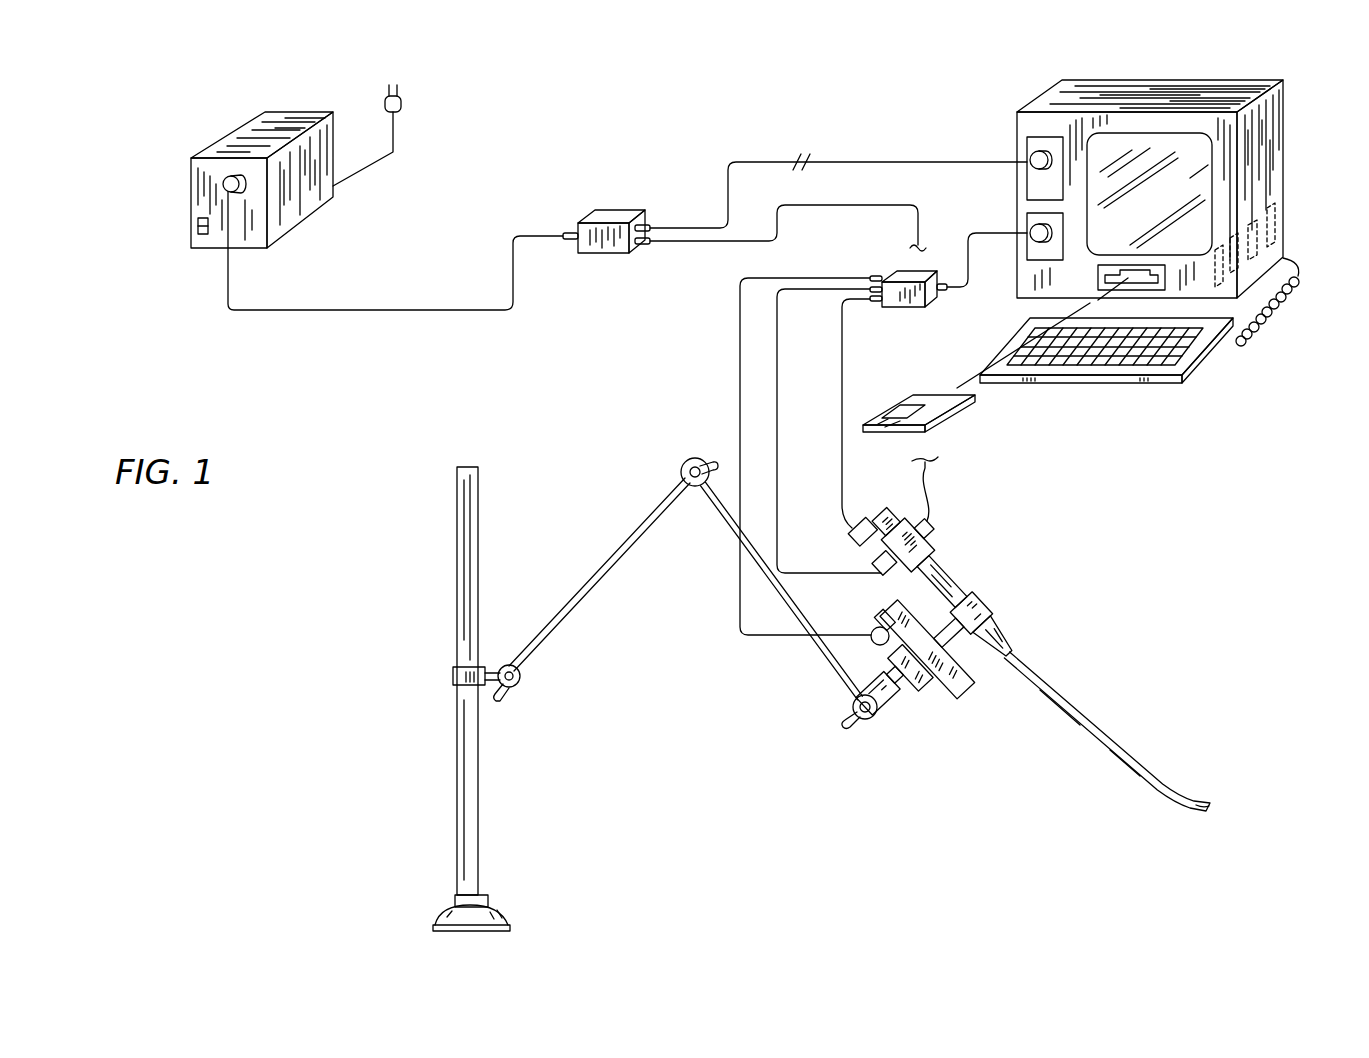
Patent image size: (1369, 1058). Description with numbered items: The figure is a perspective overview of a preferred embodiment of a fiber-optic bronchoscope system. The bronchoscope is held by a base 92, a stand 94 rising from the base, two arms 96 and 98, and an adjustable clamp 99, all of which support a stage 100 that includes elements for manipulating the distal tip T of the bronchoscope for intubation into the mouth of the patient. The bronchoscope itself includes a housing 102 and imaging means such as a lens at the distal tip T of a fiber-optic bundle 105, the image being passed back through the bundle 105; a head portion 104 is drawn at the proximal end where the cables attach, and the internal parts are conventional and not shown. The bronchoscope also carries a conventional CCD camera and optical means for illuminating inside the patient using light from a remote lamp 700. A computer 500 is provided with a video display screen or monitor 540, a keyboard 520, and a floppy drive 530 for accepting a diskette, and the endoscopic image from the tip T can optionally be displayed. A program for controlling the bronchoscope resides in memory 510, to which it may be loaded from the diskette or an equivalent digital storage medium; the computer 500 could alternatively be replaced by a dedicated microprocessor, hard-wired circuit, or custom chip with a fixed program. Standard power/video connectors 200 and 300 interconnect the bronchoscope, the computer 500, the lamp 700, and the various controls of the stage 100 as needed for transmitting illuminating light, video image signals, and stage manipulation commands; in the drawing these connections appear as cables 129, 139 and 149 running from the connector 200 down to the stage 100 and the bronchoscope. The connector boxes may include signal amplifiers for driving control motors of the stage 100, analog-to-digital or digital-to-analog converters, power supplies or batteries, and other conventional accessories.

The remote lamp 700 is at (268, 240).
The power/video connector 300 is at (612, 255).
The power/video connector 200 is at (896, 270).
The cable 129 is at (740, 328).
The cable 139 is at (777, 362).
The cable 149 is at (842, 405).
The computer 500 is at (1050, 97).
The video display screen or monitor 540 is at (1195, 187).
The memory 510 is at (1272, 238).
The floppy drive 530 is at (1096, 280).
The keyboard 520 is at (1131, 384).
The base 92 is at (500, 908).
The stand 94 is at (478, 823).
The arm 96 is at (563, 620).
The arm 98 is at (812, 658).
The adjustable clamp 99 is at (852, 720).
The stage 100 is at (990, 692).
The housing 102 is at (953, 581).
The instrument head connector 104 is at (934, 527).
The fiber-optic bundle 105 is at (1099, 729).
The distal tip T is at (1212, 808).